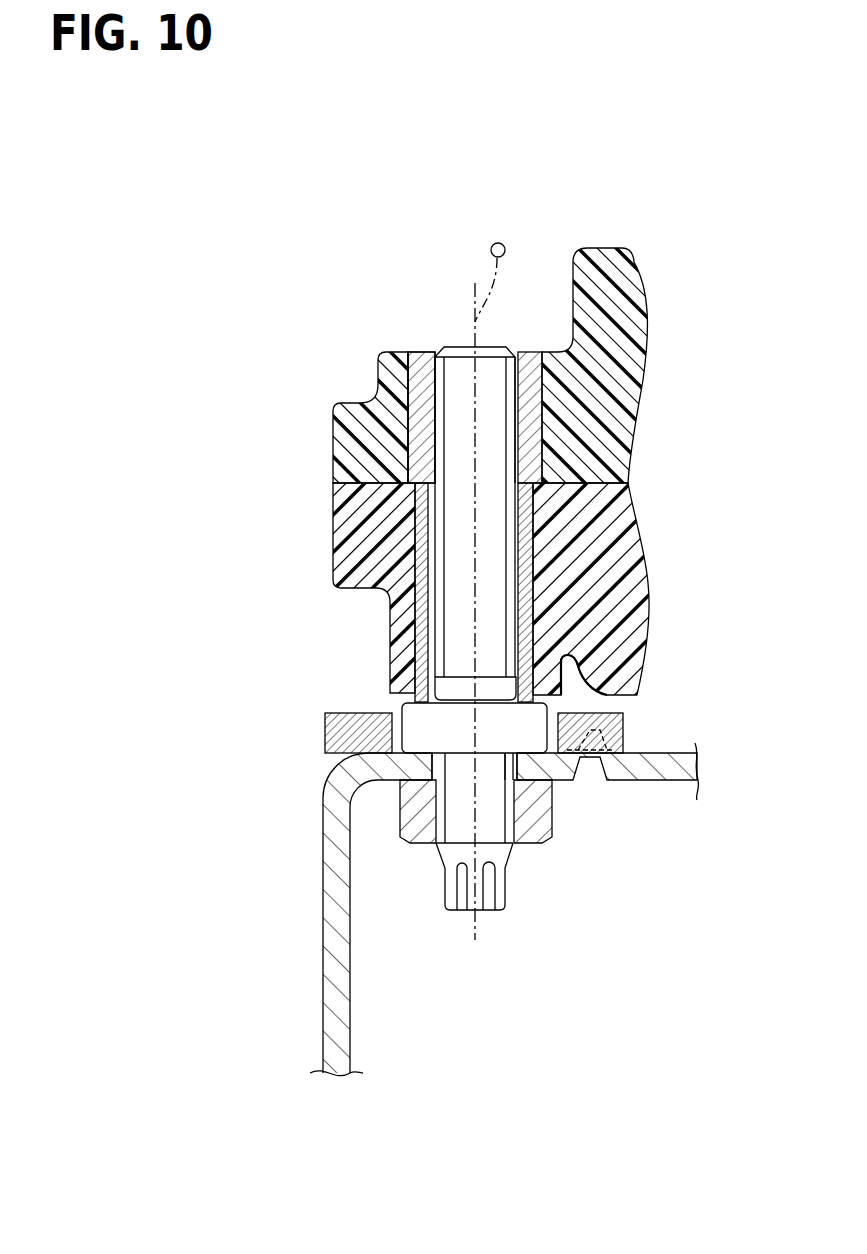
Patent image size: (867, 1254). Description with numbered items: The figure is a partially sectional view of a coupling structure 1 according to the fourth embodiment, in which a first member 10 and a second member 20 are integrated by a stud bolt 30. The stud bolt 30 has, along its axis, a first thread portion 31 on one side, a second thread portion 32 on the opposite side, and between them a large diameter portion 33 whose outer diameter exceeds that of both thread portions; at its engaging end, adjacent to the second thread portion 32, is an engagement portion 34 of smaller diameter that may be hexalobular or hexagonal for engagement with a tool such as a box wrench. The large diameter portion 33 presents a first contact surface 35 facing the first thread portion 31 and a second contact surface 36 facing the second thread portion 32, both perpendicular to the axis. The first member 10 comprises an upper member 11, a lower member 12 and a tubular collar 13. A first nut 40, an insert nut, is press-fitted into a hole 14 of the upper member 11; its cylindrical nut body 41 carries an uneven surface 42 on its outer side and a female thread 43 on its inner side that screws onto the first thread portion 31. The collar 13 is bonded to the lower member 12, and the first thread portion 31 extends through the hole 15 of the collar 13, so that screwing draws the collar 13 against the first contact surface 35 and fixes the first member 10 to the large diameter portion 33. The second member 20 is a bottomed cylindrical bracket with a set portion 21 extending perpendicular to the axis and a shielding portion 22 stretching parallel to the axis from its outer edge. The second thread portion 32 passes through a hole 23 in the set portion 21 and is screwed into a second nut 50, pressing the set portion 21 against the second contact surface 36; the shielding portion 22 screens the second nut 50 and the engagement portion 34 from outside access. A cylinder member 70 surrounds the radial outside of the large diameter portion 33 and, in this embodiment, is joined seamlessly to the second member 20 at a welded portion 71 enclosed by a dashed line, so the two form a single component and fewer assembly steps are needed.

The coupling structure 1 is at (693, 208).
The first member 10 is at (250, 472).
The upper member 11 is at (363, 460).
The lower member 12 is at (350, 528).
The collar 13 is at (537, 548).
The hole 14 is at (545, 432).
The hole 15 is at (513, 592).
The second member 20 is at (340, 783).
The set portion 21 is at (663, 760).
The shielding portion 22 is at (337, 943).
The hole 23 is at (522, 790).
The stud bolt 30 is at (460, 370).
The first thread portion 31 is at (443, 627).
The second thread portion 32 is at (445, 826).
The large diameter portion 33 is at (420, 735).
The engagement portion 34 is at (458, 912).
The first contact surface 35 is at (567, 657).
The second contact surface 36 is at (500, 790).
The first nut 40 is at (415, 352).
The nut body 41 is at (415, 352).
The uneven surface 42 is at (543, 390).
The female thread 43 is at (506, 470).
The second nut 50 is at (413, 807).
The cylinder member 70 is at (345, 717).
The welded portion 71 is at (627, 720).